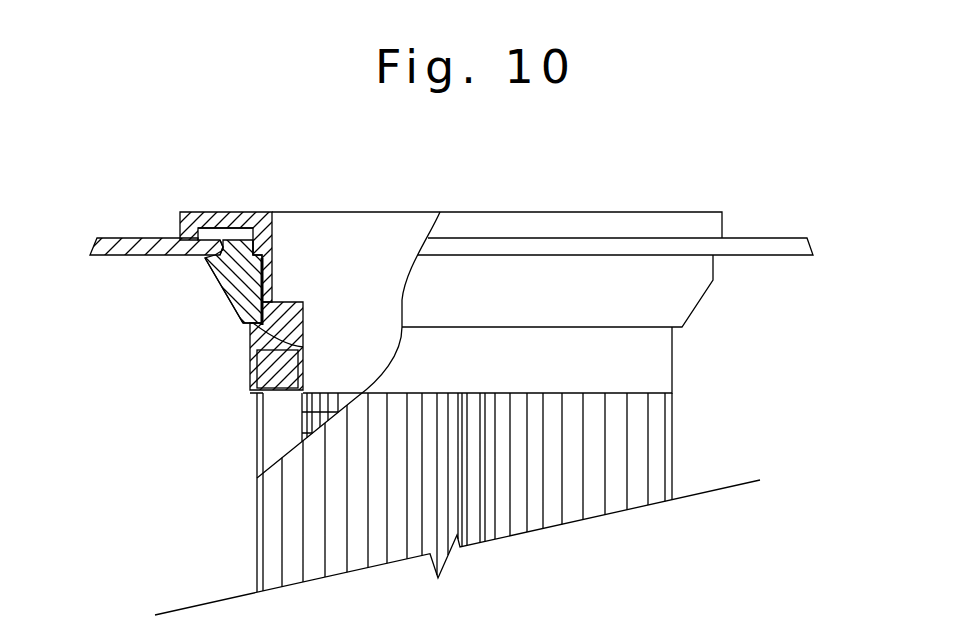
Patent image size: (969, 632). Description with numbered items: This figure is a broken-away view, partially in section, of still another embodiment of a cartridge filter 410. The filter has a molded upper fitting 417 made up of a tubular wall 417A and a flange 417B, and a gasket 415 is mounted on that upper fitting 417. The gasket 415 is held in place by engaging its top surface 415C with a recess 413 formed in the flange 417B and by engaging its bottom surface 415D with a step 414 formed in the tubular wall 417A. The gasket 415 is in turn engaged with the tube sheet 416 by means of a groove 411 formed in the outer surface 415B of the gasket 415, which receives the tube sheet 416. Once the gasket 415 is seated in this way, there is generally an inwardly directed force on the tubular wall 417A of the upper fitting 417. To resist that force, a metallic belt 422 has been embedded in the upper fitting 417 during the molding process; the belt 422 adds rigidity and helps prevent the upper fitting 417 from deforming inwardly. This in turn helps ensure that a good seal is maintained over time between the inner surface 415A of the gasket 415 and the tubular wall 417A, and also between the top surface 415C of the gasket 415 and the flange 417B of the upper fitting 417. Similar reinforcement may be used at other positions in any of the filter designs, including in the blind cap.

The cartridge filter 410 is at (683, 172).
The groove 411 is at (223, 252).
The recess 413 is at (272, 240).
The step 414 is at (303, 347).
The gasket 415 is at (698, 293).
The inner surface 415A is at (255, 254).
The outer surface 415B is at (223, 292).
The top surface 415C is at (220, 217).
The bottom surface 415D is at (260, 325).
The tube sheet 416 is at (117, 238).
The upper fitting 417 is at (485, 212).
The tubular wall 417A is at (673, 347).
The flange 417B is at (722, 223).
The metallic belt 422 is at (265, 290).